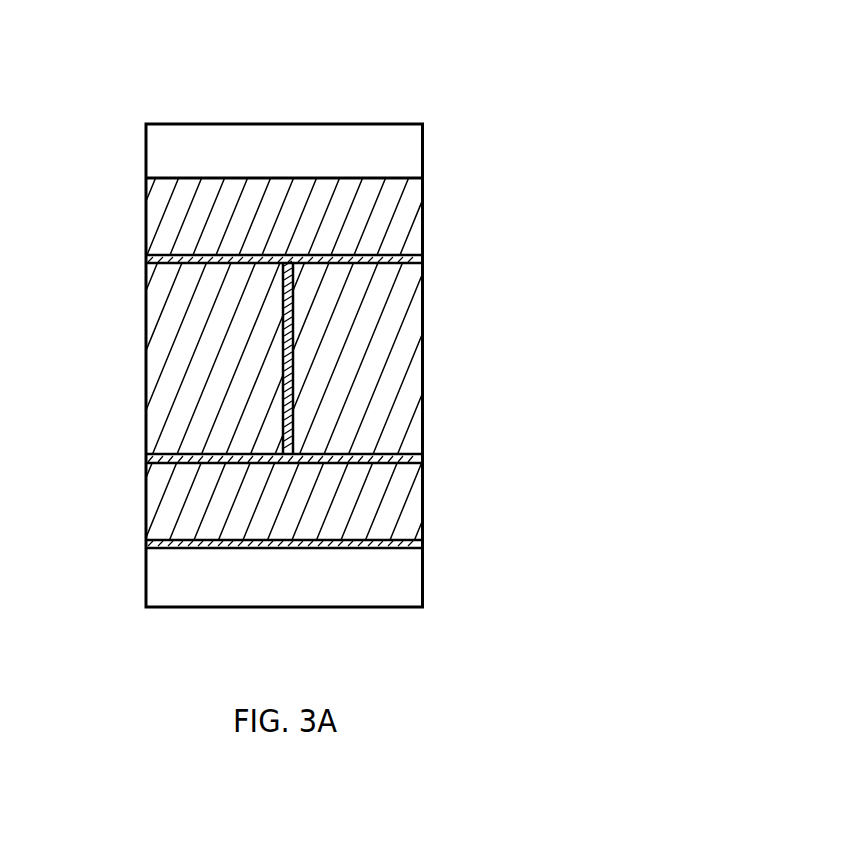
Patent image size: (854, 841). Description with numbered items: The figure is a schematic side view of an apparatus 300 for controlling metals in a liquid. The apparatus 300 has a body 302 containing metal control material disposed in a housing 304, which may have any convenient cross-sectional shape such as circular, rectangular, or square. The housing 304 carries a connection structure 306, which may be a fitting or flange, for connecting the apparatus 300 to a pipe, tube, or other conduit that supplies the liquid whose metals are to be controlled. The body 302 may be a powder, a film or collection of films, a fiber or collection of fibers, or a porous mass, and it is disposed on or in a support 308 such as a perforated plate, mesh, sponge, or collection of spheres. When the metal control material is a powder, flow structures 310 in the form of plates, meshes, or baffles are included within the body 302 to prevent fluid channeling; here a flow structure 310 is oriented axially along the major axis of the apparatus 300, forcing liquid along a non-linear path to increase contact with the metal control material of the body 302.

The apparatus 300 is at (402, 58).
The body 302 is at (398, 307).
The housing 304 is at (425, 432).
The connection structure 306 is at (423, 133).
The support 308 is at (425, 542).
The flow structures 310 is at (147, 255).